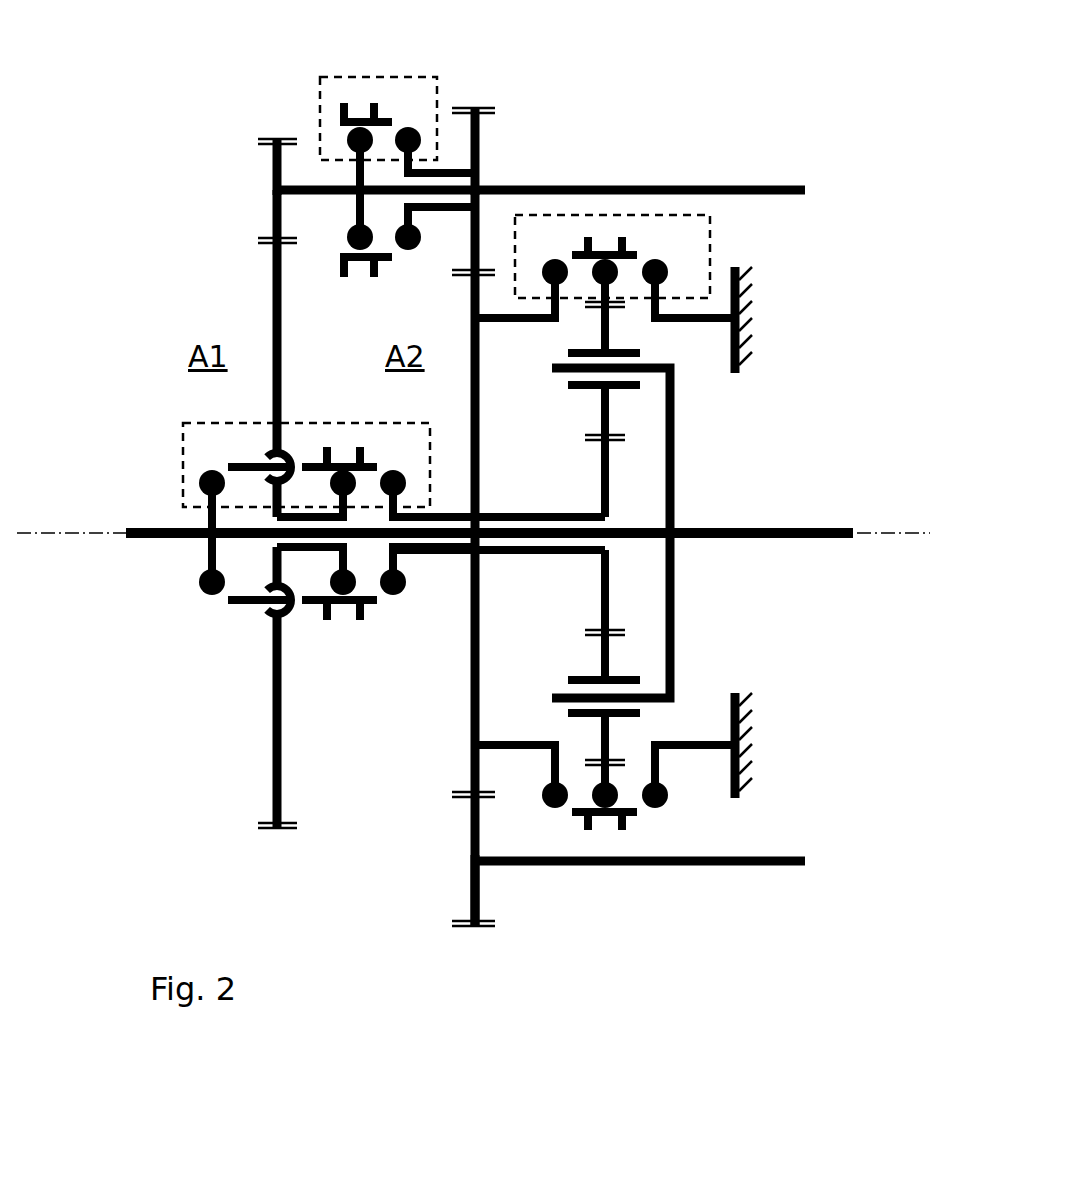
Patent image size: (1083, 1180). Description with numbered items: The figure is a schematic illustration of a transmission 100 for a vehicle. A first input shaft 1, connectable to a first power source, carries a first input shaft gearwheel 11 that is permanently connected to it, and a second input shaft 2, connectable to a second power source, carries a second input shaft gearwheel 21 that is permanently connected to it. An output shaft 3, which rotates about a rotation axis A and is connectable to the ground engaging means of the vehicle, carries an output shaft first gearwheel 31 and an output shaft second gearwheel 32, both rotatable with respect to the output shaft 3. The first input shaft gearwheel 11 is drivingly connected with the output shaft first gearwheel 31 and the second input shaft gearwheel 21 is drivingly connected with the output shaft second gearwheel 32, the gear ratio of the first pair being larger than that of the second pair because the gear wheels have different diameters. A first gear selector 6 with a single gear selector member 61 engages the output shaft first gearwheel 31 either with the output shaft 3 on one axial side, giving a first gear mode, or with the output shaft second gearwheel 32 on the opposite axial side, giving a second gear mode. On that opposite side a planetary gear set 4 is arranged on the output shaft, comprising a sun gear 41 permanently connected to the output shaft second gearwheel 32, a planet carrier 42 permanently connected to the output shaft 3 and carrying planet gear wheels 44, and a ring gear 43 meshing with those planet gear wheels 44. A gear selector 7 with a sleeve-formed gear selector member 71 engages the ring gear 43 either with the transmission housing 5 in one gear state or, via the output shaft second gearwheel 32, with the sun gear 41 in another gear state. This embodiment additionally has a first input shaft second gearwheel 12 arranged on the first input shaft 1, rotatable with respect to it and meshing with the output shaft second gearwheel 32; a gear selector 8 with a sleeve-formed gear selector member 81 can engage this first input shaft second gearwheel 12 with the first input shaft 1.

The transmission 100 is at (785, 100).
The first input shaft 1 is at (683, 186).
The first input shaft gearwheel 11 is at (272, 210).
The first input shaft second gearwheel 12 is at (480, 150).
The second input shaft 2 is at (615, 865).
The second input shaft gearwheel 21 is at (470, 873).
The output shaft 3 is at (765, 528).
The output shaft first gearwheel 31 is at (272, 338).
The output shaft second gearwheel 32 is at (470, 705).
The planetary gear set 4 is at (652, 607).
The sun gear 41 is at (612, 577).
The planet carrier 42 is at (675, 480).
The ring gear 43 is at (617, 787).
The planet gear wheels 44 is at (612, 648).
The transmission housing 5 is at (750, 320).
The first gear selector 6 is at (292, 547).
The gear selector member 61 is at (342, 602).
The gear selector for the planetary gear set 7 is at (694, 467).
The sleeve-formed gear selector member 71 is at (601, 250).
The gear selector for the input shaft second gearwheel 8 is at (394, 142).
The sleeve-formed gear selector member 81 is at (365, 120).
The rotation axis A is at (476, 512).